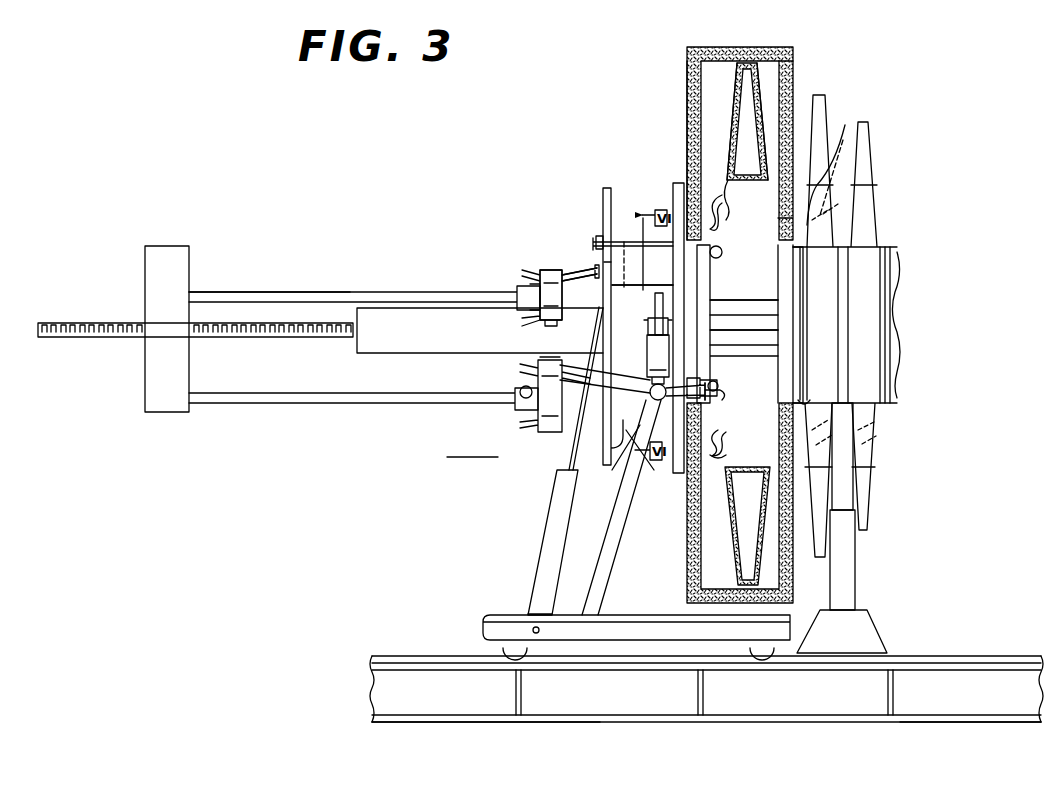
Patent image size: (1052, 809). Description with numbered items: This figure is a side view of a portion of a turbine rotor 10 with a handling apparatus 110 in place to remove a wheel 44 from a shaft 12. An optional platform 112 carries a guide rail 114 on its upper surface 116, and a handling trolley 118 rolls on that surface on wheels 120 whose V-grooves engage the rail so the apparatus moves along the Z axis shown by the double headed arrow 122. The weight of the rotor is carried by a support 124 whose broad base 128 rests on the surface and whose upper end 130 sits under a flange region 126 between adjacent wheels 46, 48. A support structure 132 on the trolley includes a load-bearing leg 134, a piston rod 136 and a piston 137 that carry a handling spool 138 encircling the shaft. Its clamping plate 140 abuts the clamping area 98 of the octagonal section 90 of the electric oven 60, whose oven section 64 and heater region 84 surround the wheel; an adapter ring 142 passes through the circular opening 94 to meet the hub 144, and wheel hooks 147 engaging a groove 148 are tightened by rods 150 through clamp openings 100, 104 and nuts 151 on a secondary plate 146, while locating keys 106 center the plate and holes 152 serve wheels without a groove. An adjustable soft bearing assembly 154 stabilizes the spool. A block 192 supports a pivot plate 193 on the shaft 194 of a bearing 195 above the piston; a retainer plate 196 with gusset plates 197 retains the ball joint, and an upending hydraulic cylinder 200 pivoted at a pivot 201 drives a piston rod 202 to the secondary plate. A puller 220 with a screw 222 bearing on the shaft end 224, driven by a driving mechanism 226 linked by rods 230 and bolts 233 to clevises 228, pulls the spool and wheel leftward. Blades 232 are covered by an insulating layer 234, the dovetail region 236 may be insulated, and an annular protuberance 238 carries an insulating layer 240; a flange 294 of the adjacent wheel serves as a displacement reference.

The rotor 10 is at (846, 96).
The shaft 12 is at (458, 302).
The wheel 44 is at (784, 374).
The wheel 46 is at (826, 270).
The wheel 48 is at (868, 275).
The electric oven 60 is at (676, 55).
The oven section 64 is at (796, 62).
The heater region 84 is at (778, 212).
The octagonal section 90 is at (686, 122).
The circular opening 94 is at (706, 402).
The clamping area 98 is at (672, 256).
The clamp opening 100 is at (667, 240).
The clamp opening 104 is at (704, 368).
The locating key 106 is at (728, 180).
The handling apparatus 110 is at (553, 200).
The platform 112 is at (985, 616).
The guide rail 114 is at (1010, 670).
The upper surface 116 is at (990, 660).
The handling trolley 118 is at (505, 630).
The wheels 120 is at (508, 652).
The double headed arrow 122 is at (500, 457).
The support 124 is at (858, 560).
The flange region 126 is at (834, 232).
The base 128 is at (885, 625).
The upper end 130 is at (845, 412).
The support structure 132 is at (522, 518).
The load-bearing leg 134 is at (614, 520).
The piston rod 136 is at (602, 337).
The piston 137 is at (652, 356).
The handling spool 138 is at (592, 268).
The clamping plate 140 is at (673, 276).
The adapter ring 142 is at (698, 280).
The hub 144 is at (704, 318).
The secondary plate 146 is at (606, 262).
The wheel hooks 147 is at (722, 252).
The groove 148 is at (704, 350).
The rods 150 is at (622, 240).
The nuts 151 is at (602, 238).
The holes 152 is at (840, 167).
The adjustable soft bearing assembly 154 is at (546, 270).
The block 192 is at (704, 300).
The pivot plate 193 is at (654, 302).
The shaft 194 is at (650, 326).
The bearing 195 is at (704, 335).
The retainer plate 196 is at (653, 450).
The gusset plates 197 is at (606, 355).
The upending hydraulic cylinder 200 is at (555, 500).
The pivot 201 is at (540, 633).
The piston rod 202 is at (568, 456).
The puller 220 is at (305, 275).
The screw 222 is at (270, 340).
The end 224 is at (345, 312).
The driving mechanism 226 is at (156, 366).
The clevises 228 is at (522, 406).
The rods 230 is at (336, 407).
The blades 232 is at (746, 145).
The bolts 233 is at (522, 388).
The insulating layer 234 is at (736, 118).
The dovetail region 236 is at (747, 186).
The annular protuberance 238 is at (720, 433).
The insulating layer 240 is at (720, 452).
The flange 294 is at (822, 392).